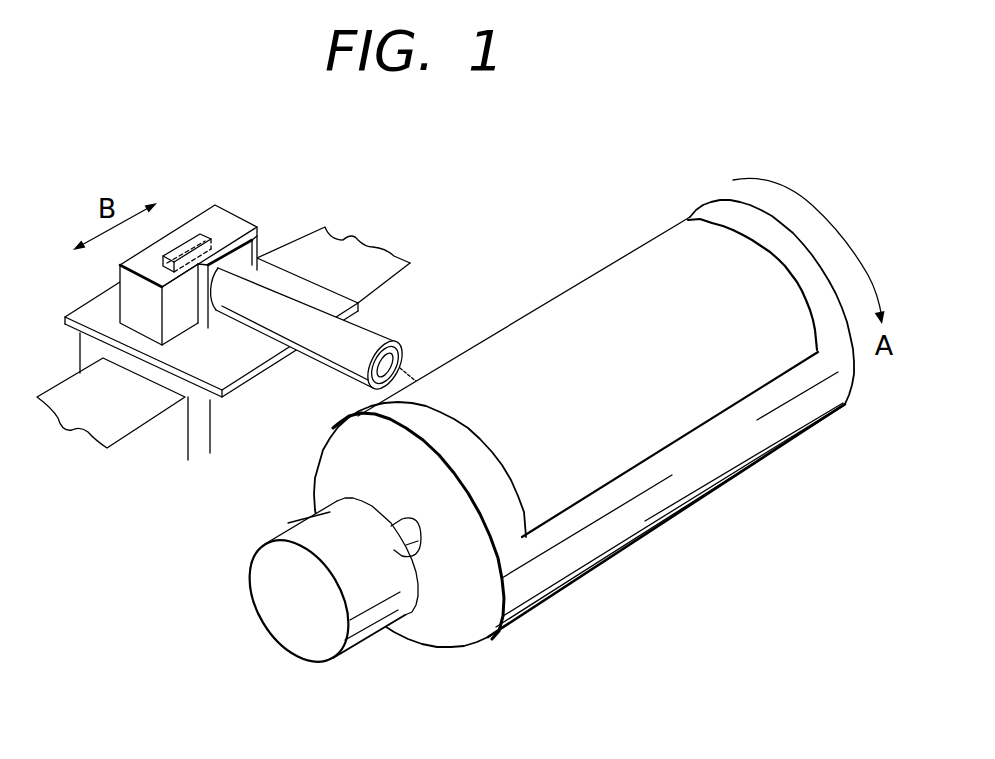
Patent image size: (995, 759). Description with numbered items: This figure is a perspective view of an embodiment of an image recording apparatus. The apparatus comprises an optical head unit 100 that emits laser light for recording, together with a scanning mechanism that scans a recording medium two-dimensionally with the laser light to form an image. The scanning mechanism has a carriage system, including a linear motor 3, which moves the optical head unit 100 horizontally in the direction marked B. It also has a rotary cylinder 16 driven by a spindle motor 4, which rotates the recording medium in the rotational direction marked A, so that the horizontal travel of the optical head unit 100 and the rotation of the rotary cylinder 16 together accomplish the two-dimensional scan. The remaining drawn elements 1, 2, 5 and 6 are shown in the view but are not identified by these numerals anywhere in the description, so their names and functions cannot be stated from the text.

The recording drum 1 is at (650, 263).
The pen holder block 2 is at (231, 223).
The linear motor 3 is at (82, 347).
The spindle motor 4 is at (274, 562).
The pen 5 is at (317, 287).
The slot 6 is at (190, 237).
The rotary cylinder 16 is at (731, 217).
The optical head unit 100 is at (269, 264).